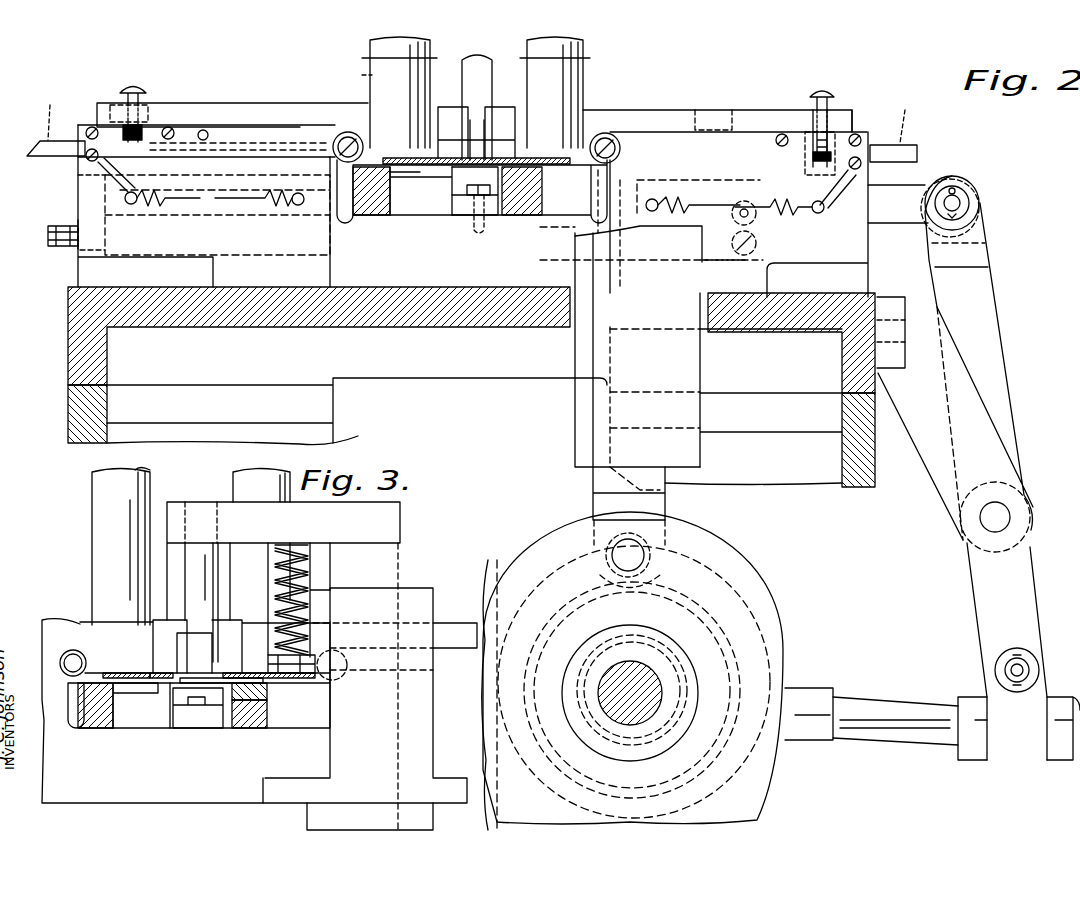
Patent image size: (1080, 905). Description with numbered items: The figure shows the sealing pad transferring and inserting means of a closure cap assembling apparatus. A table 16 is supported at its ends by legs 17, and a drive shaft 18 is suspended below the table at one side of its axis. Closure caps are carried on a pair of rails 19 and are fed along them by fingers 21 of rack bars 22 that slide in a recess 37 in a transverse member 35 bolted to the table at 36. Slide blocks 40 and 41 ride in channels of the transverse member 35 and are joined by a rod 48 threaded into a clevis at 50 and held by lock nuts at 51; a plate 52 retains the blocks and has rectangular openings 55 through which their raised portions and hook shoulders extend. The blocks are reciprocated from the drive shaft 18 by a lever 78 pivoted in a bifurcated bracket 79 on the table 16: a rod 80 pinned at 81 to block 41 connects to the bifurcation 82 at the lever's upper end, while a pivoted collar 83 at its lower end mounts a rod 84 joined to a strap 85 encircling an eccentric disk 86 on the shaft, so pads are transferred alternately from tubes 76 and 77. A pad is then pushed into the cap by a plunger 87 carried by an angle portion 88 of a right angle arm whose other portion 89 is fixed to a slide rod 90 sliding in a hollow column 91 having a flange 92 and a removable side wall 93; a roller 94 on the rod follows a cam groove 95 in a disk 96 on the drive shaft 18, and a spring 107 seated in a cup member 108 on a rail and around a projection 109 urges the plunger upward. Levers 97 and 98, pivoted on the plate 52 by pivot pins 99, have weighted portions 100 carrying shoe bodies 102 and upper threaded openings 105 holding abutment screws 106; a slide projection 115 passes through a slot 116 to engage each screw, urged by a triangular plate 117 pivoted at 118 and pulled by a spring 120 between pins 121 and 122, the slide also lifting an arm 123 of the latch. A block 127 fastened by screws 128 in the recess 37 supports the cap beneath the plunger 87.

In FIG. 2, the table 16 is at (462, 378).
In FIG. 2, the legs 17 is at (835, 506).
In FIG. 2, the drive shaft 18 is at (650, 675).
In FIG. 2, the rails 19 is at (447, 166).
In FIG. 3, the rails 19 is at (167, 684).
In FIG. 2, the fingers 21 is at (418, 178).
In FIG. 3, the fingers 21 is at (141, 696).
In FIG. 2, the rack bars 22 is at (400, 190).
In FIG. 3, the rack bars 22 is at (100, 730).
In FIG. 2, the transverse member 35 is at (380, 300).
In FIG. 3, the transverse member 35 is at (152, 800).
In FIG. 2, the bolts in flanges 36 is at (80, 268).
In FIG. 2, the recess 37 is at (425, 210).
In FIG. 3, the recess 37 is at (143, 728).
In FIG. 2, the block 40 is at (175, 165).
In FIG. 2, the block 41 is at (680, 170).
In FIG. 2, the rod 48 is at (340, 260).
In FIG. 2, the screw threaded connection 50 is at (712, 256).
In FIG. 2, the lock nuts 51 is at (50, 232).
In FIG. 2, the plate 52 is at (36, 141).
In FIG. 2, the rectangular openings 55 is at (481, 114).
In FIG. 2, the tube 76 is at (362, 58).
In FIG. 3, the tube 76 is at (98, 540).
In FIG. 2, the tube 77 is at (590, 72).
In FIG. 3, the tube 77 is at (245, 470).
In FIG. 2, the lever 78 is at (985, 303).
In FIG. 2, the bifurcated bracket 79 is at (935, 463).
In FIG. 2, the rod 80 is at (915, 198).
In FIG. 2, the pin 81 is at (755, 232).
In FIG. 2, the bifurcation 82 is at (985, 228).
In FIG. 2, the pivoted collar 83 is at (1012, 762).
In FIG. 2, the rod 84 is at (900, 700).
In FIG. 2, the strap 85 is at (783, 636).
In FIG. 2, the eccentric disk 86 is at (735, 755).
In FIG. 3, the plunger 87 is at (200, 560).
In FIG. 3, the angle portion 88 is at (173, 500).
In FIG. 3, the angle portion 89 is at (400, 502).
In FIG. 2, the slide rod 90 is at (600, 488).
In FIG. 3, the slide rod 90 is at (400, 570).
In FIG. 2, the hollow column 91 is at (700, 448).
In FIG. 2, the flange 92 is at (560, 277).
In FIG. 3, the flange 92 is at (440, 605).
In FIG. 2, the removable side wall 93 is at (573, 431).
In FIG. 3, the removable side wall 93 is at (307, 820).
In FIG. 2, the roller 94 is at (650, 555).
In FIG. 2, the cam groove 95 is at (740, 545).
In FIG. 2, the disk 96 is at (770, 572).
In FIG. 2, the lever 97 is at (252, 103).
In FIG. 3, the lever 97 is at (60, 625).
In FIG. 2, the lever 98 is at (665, 110).
In FIG. 3, the lever 98 is at (490, 620).
In FIG. 2, the pivot pin 99 is at (340, 135).
In FIG. 3, the pivot pin 99 is at (75, 650).
In FIG. 2, the weighted portion 100 is at (450, 107).
In FIG. 3, the weighted portion 100 is at (170, 620).
In FIG. 2, the shoe body portion 102 is at (478, 115).
In FIG. 3, the shoe body portion 102 is at (222, 615).
In FIG. 2, the screw threaded opening 105 is at (848, 108).
In FIG. 2, the abutment screw 106 is at (138, 85).
In FIG. 3, the spring 107 is at (277, 575).
In FIG. 3, the cup member 108 is at (272, 658).
In FIG. 3, the projection 109 is at (320, 556).
In FIG. 2, the projection 115 is at (172, 128).
In FIG. 2, the slot 116 is at (140, 120).
In FIG. 2, the triangular plate 117 is at (110, 175).
In FIG. 2, the pivot mounting 118 is at (86, 160).
In FIG. 2, the spring 120 is at (262, 196).
In FIG. 2, the pin 121 is at (134, 205).
In FIG. 2, the pin 122 is at (298, 206).
In FIG. 2, the arm 123 is at (708, 110).
In FIG. 2, the block 127 is at (465, 220).
In FIG. 3, the block 127 is at (203, 730).
In FIG. 2, the screws 128 is at (478, 232).